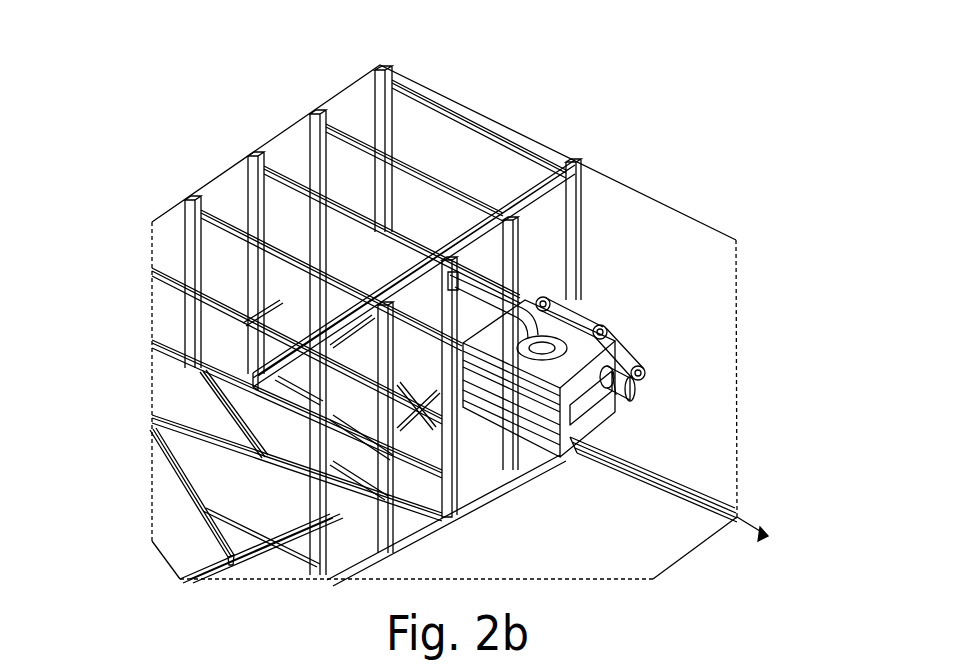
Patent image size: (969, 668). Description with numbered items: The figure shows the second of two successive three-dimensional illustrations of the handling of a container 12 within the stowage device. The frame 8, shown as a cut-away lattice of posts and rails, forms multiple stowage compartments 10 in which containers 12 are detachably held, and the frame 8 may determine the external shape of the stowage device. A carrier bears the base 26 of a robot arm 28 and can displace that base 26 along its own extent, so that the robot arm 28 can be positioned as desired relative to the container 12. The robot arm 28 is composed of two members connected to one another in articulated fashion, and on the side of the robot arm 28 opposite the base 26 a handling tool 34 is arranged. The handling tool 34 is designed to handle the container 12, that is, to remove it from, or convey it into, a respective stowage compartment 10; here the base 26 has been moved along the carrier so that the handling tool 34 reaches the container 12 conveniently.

The frame 8 is at (480, 123).
The stowage compartment 10 is at (410, 277).
The container 12 is at (573, 440).
The base 26 is at (487, 207).
The robot arm 28 is at (497, 277).
The handling tool 34 is at (572, 324).